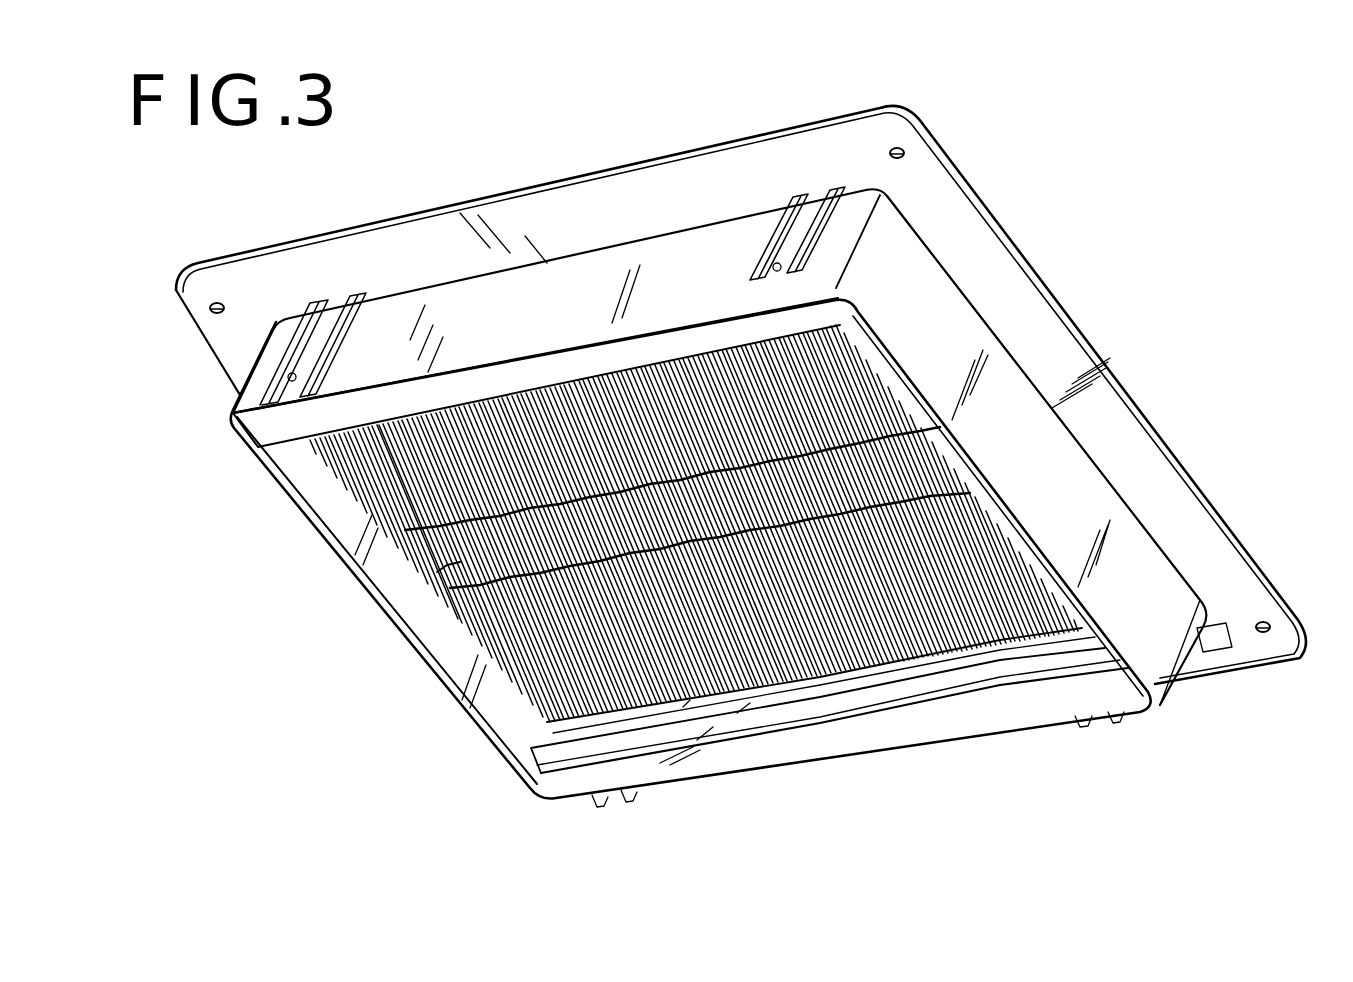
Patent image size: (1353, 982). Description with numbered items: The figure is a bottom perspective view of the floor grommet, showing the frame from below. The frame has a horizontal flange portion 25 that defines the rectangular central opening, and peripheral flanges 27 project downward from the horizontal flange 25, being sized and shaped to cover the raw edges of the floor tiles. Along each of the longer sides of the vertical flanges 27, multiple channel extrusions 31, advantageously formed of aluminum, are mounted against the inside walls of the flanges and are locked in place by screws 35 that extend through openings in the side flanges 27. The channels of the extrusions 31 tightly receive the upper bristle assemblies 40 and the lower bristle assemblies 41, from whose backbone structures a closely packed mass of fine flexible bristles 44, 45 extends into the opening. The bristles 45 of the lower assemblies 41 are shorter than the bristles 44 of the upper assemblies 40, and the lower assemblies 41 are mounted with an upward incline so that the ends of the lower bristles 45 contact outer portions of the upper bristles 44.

The horizontal flange portion 25 is at (967, 216).
The peripheral flanges 27 is at (1150, 558).
The channel extrusions 31 is at (520, 389).
The screws 35 is at (775, 266).
The upper bristle assemblies 40 is at (438, 570).
The lower bristle assemblies 41 is at (464, 626).
The bristles of the upper assemblies 44 is at (945, 438).
The bristles of the lower assemblies 45 is at (878, 407).